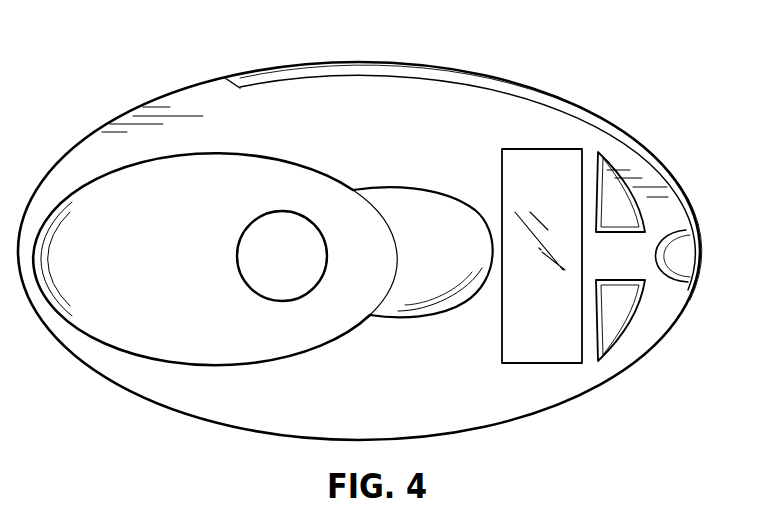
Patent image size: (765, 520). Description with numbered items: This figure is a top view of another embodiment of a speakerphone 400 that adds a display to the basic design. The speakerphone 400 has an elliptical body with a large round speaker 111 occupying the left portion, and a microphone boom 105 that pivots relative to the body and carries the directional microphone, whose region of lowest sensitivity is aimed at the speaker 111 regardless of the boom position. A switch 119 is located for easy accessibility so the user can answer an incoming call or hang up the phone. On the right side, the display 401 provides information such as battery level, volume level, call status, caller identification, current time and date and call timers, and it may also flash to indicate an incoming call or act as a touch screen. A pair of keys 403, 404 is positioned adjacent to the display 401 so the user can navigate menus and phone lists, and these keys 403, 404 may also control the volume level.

The speakerphone 400 is at (162, 78).
The microphone boom 105 is at (475, 80).
The speaker 111 is at (163, 345).
The switch 119 is at (405, 192).
The display 401 is at (568, 158).
The key 404 is at (607, 180).
The key 403 is at (615, 318).